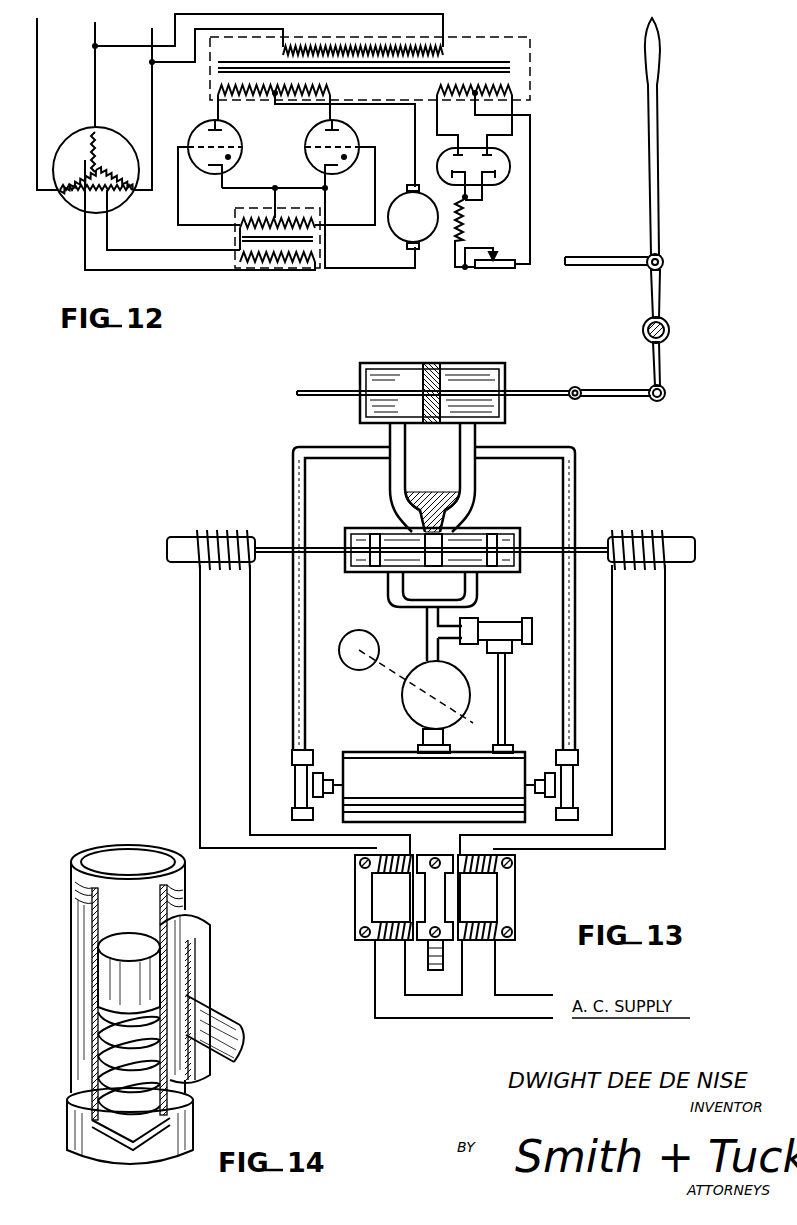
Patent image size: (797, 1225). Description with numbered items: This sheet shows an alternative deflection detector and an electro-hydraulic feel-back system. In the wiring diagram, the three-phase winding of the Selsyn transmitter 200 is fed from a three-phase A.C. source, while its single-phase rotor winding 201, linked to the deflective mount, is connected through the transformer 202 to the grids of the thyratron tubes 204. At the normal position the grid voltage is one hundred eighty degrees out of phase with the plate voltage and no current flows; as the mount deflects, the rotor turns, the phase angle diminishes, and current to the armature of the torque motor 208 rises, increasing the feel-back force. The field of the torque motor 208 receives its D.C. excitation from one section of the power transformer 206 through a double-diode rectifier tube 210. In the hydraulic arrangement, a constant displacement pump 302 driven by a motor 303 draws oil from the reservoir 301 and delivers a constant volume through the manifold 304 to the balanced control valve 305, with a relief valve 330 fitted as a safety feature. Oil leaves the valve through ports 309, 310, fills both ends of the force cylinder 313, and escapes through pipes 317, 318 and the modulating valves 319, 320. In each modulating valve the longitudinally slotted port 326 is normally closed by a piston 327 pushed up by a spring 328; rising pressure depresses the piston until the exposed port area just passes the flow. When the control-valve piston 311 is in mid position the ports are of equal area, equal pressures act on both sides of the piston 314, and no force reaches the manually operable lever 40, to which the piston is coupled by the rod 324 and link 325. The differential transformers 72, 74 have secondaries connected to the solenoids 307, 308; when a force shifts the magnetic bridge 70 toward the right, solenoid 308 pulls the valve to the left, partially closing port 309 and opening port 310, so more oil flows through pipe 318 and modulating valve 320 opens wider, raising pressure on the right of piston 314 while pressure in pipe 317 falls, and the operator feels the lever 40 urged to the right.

In FIG. 12, the Selsyn transmitter 200 is at (70, 198).
In FIG. 12, the single-phase winding 201 is at (99, 166).
In FIG. 12, the transformer 202 is at (236, 221).
In FIG. 12, the thyratron tubes 204 is at (305, 148).
In FIG. 12, the power transformer 206 is at (530, 60).
In FIG. 12, the torque motor 208 is at (413, 217).
In FIG. 12, the double-diode rectifier tube 210 is at (510, 168).
In FIG. 13, the manually operable lever 40 is at (659, 196).
In FIG. 13, the magnetic bridge 70 is at (445, 900).
In FIG. 13, the differential transformer 72 is at (356, 893).
In FIG. 13, the differential transformer 74 is at (516, 893).
In FIG. 13, the oil sump or reservoir 301 is at (434, 787).
In FIG. 13, the constant displacement pump 302 is at (436, 707).
In FIG. 13, the motor 303 is at (360, 631).
In FIG. 13, the manifold 304 is at (478, 600).
In FIG. 13, the balanced control-valve 305 is at (527, 522).
In FIG. 13, the solenoid 307 is at (197, 536).
In FIG. 13, the solenoid 308 is at (660, 536).
In FIG. 13, the port 309 is at (410, 526).
In FIG. 13, the port 310 is at (456, 526).
In FIG. 13, the control-valve piston 311 is at (432, 589).
In FIG. 13, the force-cylinder 313 is at (478, 356).
In FIG. 13, the piston 314 is at (428, 378).
In FIG. 13, the pipe 317 is at (293, 478).
In FIG. 13, the pipe 318 is at (575, 484).
In FIG. 13, the modulating valve 319 is at (298, 796).
In FIG. 14, the modulating valve 319 is at (72, 955).
In FIG. 13, the modulating valve 320 is at (578, 796).
In FIG. 13, the rod 324 is at (528, 391).
In FIG. 13, the link 325 is at (620, 380).
In FIG. 14, the longitudinally slotted port 326 is at (172, 990).
In FIG. 14, the piston 327 is at (129, 973).
In FIG. 14, the spring 328 is at (143, 1130).
In FIG. 13, the relief valve 330 is at (515, 645).